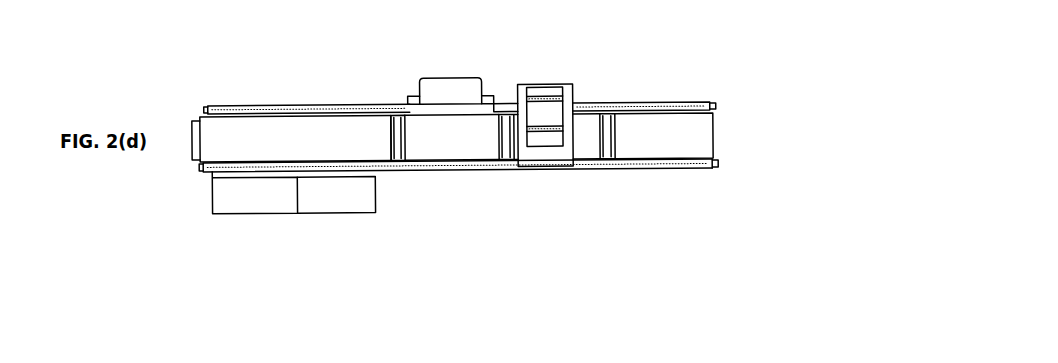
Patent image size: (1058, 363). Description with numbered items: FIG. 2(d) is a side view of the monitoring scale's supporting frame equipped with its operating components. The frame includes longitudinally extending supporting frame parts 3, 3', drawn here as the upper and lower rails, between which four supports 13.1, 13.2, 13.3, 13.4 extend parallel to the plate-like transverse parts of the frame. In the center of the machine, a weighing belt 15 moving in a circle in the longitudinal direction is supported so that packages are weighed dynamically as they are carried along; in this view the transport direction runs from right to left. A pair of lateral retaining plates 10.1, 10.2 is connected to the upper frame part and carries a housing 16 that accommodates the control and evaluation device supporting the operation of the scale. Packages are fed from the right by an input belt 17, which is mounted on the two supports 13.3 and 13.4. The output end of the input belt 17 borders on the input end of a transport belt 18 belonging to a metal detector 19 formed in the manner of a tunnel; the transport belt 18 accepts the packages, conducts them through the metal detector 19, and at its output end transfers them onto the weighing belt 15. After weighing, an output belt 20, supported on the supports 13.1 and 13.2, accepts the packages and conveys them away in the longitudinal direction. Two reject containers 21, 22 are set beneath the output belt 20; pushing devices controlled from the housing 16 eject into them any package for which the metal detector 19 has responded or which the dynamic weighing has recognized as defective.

The supporting frame part 3 is at (644, 81).
The supporting frame part 3' is at (455, 188).
The retaining plate 10.1 is at (407, 103).
The retaining plate 10.2 is at (493, 107).
The support 13.1 is at (230, 113).
The support 13.2 is at (352, 114).
The support 13.3 is at (630, 161).
The support 13.4 is at (697, 161).
The weighing belt 15 is at (457, 140).
The housing 16 is at (450, 90).
The input belt 17 is at (680, 138).
The transport belt 18 is at (593, 142).
The metal detector 19 is at (552, 158).
The output belt 20 is at (293, 140).
The reject container 21 is at (243, 203).
The reject container 22 is at (332, 202).